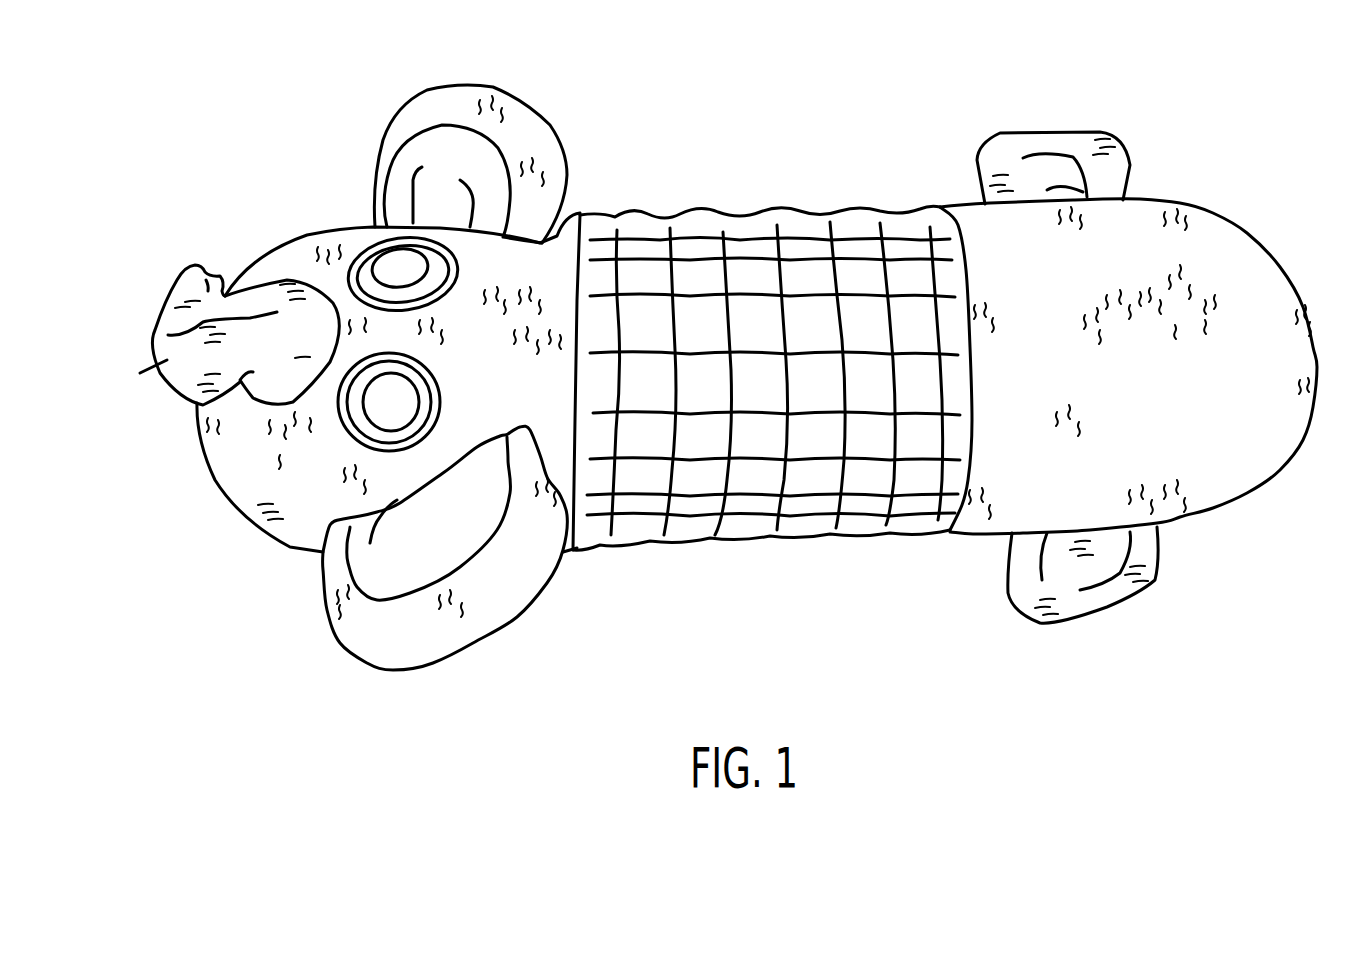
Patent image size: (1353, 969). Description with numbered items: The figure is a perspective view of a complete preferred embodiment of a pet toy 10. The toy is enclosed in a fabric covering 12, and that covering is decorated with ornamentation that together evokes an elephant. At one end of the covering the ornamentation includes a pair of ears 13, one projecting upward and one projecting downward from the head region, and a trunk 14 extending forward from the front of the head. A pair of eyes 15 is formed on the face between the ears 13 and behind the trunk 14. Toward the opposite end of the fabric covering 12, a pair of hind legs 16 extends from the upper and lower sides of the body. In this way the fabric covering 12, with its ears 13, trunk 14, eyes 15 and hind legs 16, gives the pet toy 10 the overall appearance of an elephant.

The pet toy 10 is at (800, 188).
The fabric covering 12 is at (1245, 483).
The ears 13 is at (447, 90).
The trunk 14 is at (165, 362).
The eyes 15 is at (415, 267).
The hind legs 16 is at (1013, 140).